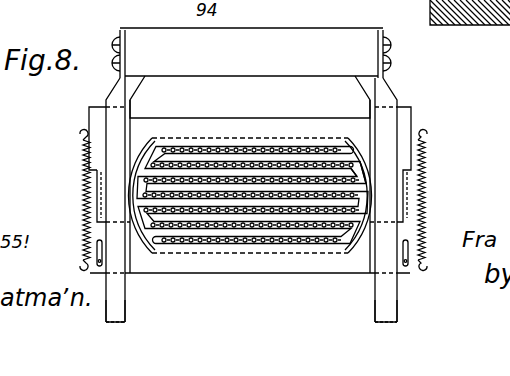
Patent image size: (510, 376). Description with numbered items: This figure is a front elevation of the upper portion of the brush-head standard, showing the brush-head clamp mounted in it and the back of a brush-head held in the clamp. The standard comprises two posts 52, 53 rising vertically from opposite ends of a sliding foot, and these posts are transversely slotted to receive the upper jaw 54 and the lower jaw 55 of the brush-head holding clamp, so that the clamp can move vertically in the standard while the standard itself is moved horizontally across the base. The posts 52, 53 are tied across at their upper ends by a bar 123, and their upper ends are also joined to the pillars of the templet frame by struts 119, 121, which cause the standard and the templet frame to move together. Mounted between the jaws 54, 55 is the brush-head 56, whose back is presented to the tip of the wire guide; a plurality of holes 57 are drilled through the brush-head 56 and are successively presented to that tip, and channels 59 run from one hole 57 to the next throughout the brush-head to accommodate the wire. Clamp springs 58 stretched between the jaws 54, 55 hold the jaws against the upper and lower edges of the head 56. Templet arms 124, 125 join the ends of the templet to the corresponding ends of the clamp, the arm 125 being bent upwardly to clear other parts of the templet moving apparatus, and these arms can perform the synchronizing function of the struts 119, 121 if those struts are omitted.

The post 52 is at (112, 292).
The post 53 is at (390, 297).
The upper jaw 54 is at (90, 106).
The lower jaw 55 is at (174, 265).
The brush-head 56 is at (350, 148).
The holes 57 is at (365, 172).
The clamp springs 58 is at (90, 170).
The channels 59 is at (253, 252).
The strut 119 is at (112, 40).
The strut 121 is at (383, 52).
The bar 123 is at (291, 40).
The templet arm 124 is at (89, 193).
The templet arm 125 is at (405, 192).